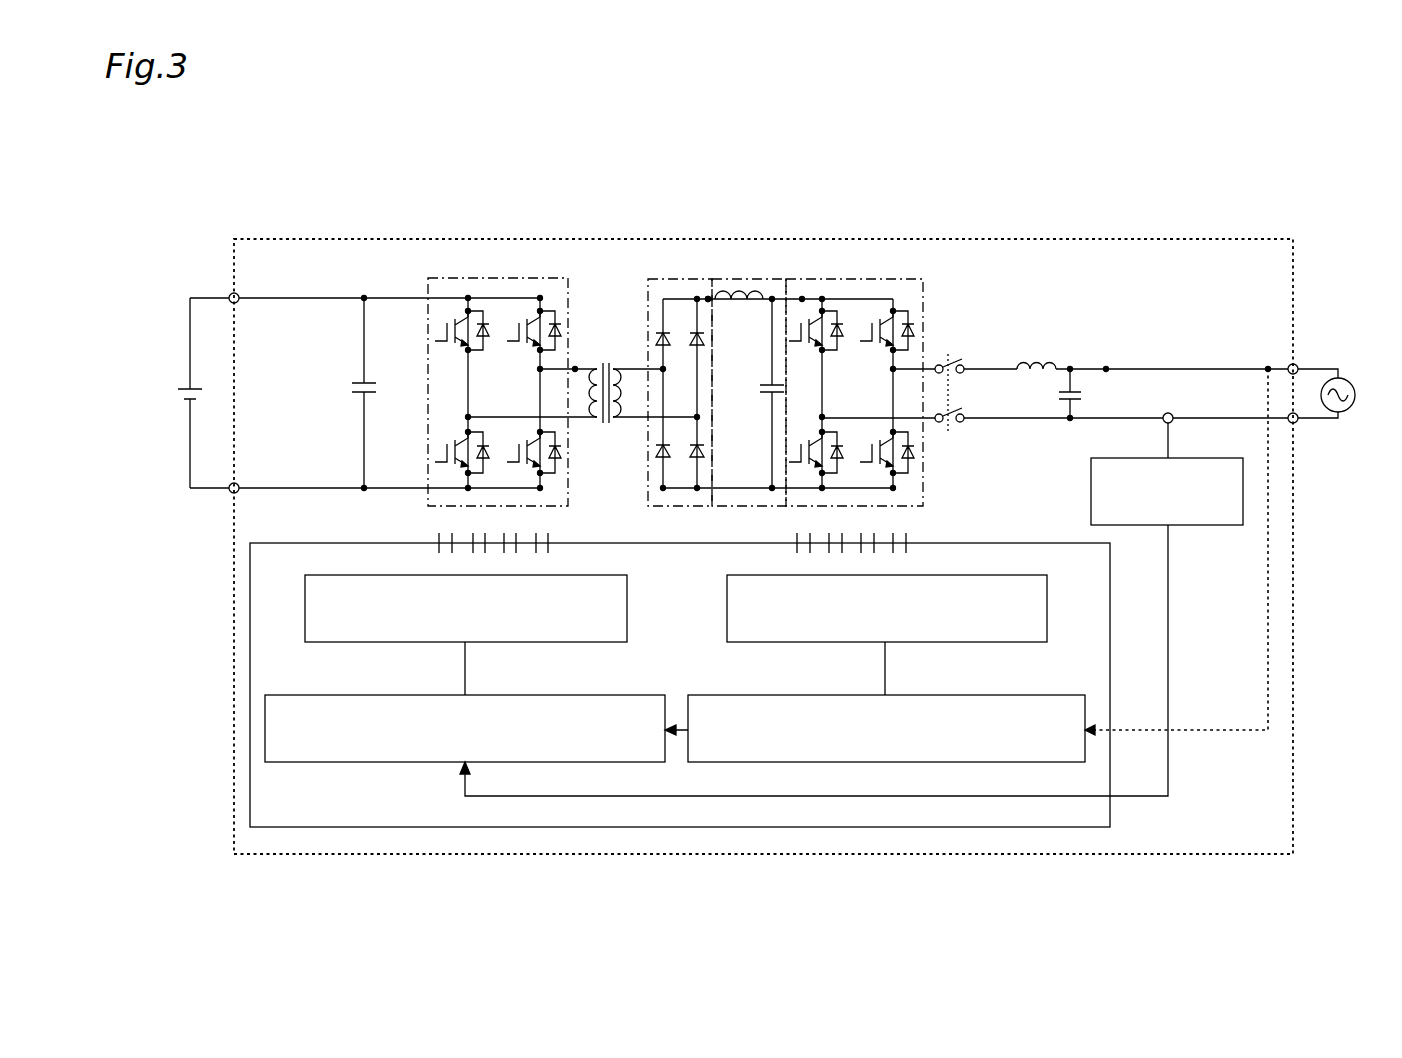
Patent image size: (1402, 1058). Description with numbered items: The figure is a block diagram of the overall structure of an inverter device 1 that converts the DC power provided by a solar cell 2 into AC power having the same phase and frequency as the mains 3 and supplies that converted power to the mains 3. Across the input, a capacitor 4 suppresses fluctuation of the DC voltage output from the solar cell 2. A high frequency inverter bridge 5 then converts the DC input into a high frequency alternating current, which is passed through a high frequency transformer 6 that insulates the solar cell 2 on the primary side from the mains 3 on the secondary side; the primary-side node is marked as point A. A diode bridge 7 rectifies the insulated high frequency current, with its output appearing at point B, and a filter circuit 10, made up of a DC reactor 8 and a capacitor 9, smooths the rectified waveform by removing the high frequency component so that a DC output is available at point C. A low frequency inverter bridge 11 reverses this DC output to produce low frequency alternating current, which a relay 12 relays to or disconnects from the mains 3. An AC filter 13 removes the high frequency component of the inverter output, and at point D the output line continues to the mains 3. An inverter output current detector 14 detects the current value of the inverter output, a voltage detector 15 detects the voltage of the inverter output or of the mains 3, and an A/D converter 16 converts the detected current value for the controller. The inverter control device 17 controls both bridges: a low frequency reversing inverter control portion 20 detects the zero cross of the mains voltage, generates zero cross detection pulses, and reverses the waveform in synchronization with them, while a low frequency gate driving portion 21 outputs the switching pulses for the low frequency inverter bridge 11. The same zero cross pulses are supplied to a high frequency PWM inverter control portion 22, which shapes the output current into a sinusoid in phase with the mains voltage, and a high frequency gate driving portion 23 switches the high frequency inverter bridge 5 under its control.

The inverter device 1 is at (1122, 239).
The solar cell 2 is at (186, 405).
The mains 3 is at (1350, 412).
The capacitor 4 is at (357, 398).
The high frequency inverter bridge 5 is at (448, 278).
The high frequency transformer 6 is at (607, 365).
The diode bridge 7 is at (676, 279).
The DC reactor 8 is at (733, 306).
The capacitor 9 is at (768, 398).
The filter circuit 10 is at (755, 378).
The low frequency inverter bridge 11 is at (852, 279).
The relay 12 is at (948, 355).
The AC filter 13 is at (1036, 355).
The inverter output current detector 14 is at (1174, 422).
The voltage detector 15 is at (1268, 368).
The A/D converter 16 is at (1225, 525).
The inverter control device 17 is at (697, 718).
The low frequency reversing inverter control portion 20 is at (1072, 694).
The low frequency gate driving portion 21 is at (1047, 608).
The high frequency PWM inverter control portion 22 is at (652, 694).
The high frequency gate driving portion 23 is at (627, 608).
The point A is at (577, 366).
The point B is at (708, 297).
The point C is at (802, 297).
The point D is at (1106, 368).